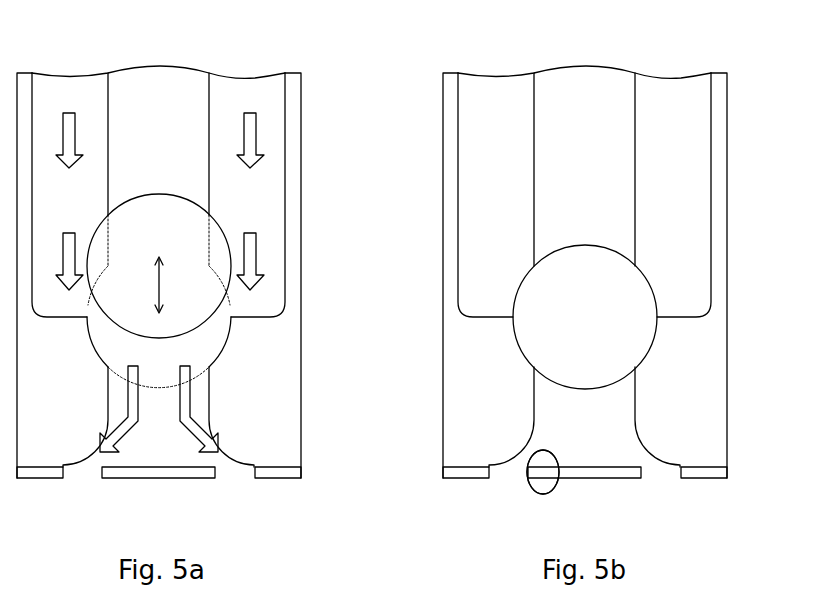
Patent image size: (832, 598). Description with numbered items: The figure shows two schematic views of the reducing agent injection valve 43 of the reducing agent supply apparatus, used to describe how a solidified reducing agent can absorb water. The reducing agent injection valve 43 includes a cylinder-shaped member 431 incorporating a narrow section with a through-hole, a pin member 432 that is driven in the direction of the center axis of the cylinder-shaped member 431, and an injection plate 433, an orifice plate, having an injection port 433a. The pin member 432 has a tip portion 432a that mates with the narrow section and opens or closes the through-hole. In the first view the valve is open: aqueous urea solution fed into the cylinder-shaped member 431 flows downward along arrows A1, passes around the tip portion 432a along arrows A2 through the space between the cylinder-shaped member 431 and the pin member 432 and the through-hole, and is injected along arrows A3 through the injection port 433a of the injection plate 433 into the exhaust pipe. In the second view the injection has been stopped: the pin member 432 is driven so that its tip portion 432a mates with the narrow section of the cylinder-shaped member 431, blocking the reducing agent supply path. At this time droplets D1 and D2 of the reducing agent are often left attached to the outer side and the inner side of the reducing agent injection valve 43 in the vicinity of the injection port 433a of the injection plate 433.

In FIG. 5A, the reducing agent injection valve 43 is at (312, 119).
In FIG. 5B, the reducing agent injection valve 43 is at (736, 142).
In FIG. 5A, the cylinder-shaped member 431 is at (301, 348).
In FIG. 5B, the cylinder-shaped member 431 is at (442, 425).
In FIG. 5A, the pin member 432 is at (209, 185).
In FIG. 5B, the pin member 432 is at (533, 127).
In FIG. 5A, the tip portion 432a is at (230, 299).
In FIG. 5B, the tip portion 432a is at (514, 297).
In FIG. 5A, the injection plate 433 is at (122, 479).
In FIG. 5B, the injection plate 433 is at (587, 480).
In FIG. 5A, the injection port 433a is at (254, 480).
In FIG. 5B, the injection port 433a is at (488, 479).
In FIG. 5A, the inflow direction A1 is at (258, 128).
In FIG. 5A, the flow direction along ball A2 is at (258, 248).
In FIG. 5A, the outflow direction A3 is at (198, 417).
In FIG. 5B, the droplet D1 is at (545, 495).
In FIG. 5B, the droplet D2 is at (553, 455).